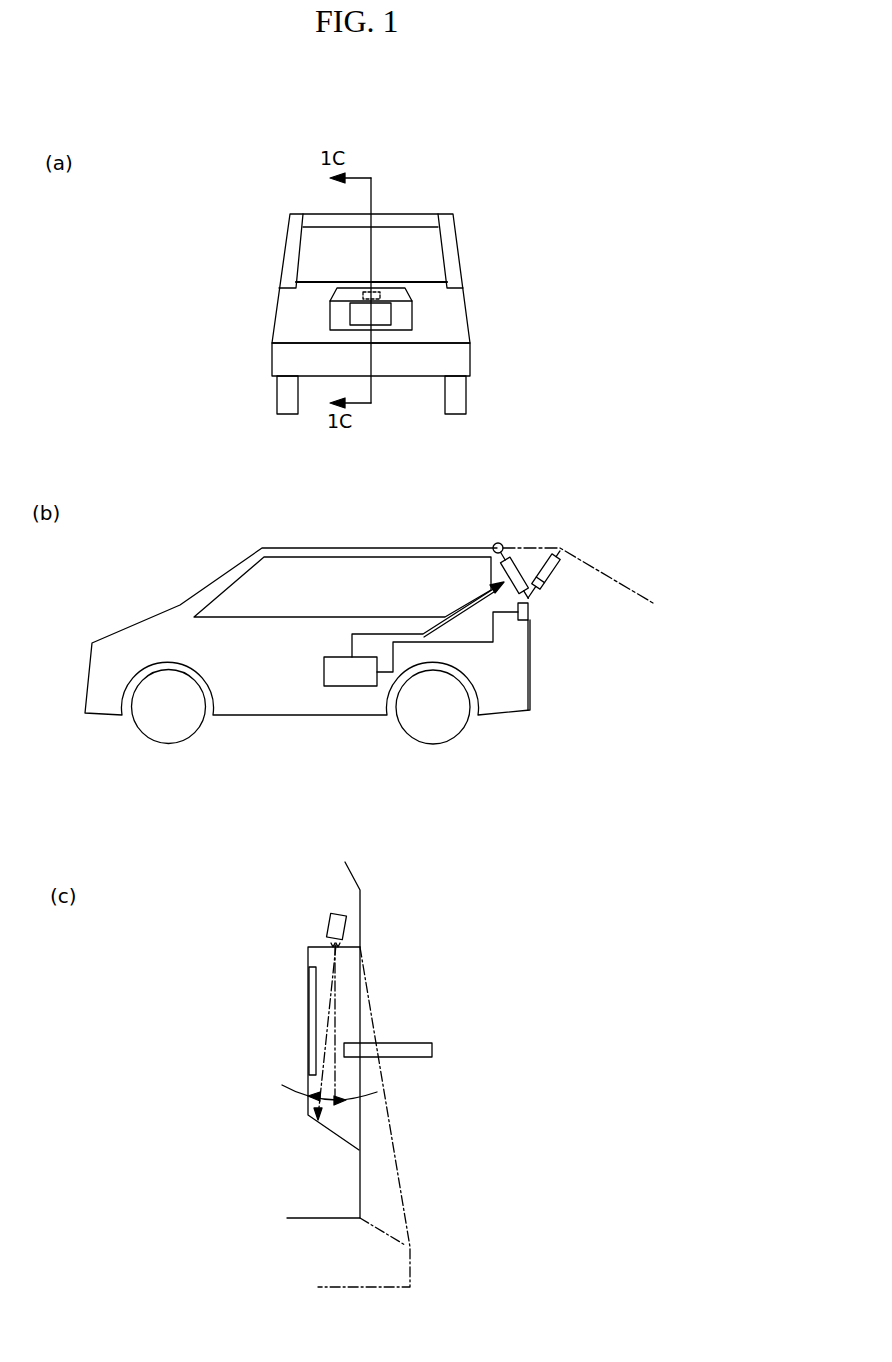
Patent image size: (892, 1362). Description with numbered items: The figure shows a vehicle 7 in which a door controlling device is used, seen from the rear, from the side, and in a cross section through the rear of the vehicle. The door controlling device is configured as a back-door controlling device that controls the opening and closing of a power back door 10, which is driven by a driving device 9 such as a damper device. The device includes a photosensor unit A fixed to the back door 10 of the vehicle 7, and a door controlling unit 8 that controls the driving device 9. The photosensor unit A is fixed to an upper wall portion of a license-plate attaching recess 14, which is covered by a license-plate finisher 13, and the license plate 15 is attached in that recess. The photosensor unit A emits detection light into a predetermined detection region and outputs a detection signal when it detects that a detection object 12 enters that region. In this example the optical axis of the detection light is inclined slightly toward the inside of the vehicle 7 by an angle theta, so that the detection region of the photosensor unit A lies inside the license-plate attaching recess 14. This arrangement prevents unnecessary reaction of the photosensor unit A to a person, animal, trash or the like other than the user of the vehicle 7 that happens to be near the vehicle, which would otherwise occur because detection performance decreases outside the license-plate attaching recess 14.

The vehicle 7 is at (478, 312).
The door controlling unit 8 is at (335, 677).
The driving device 9 is at (503, 568).
The back door 10 is at (288, 313).
The detection object 12 is at (422, 1050).
The license-plate finisher 13 is at (398, 293).
The license-plate attaching recess 14 is at (407, 313).
The license plate 15 is at (382, 318).
The photosensor unit A is at (528, 612).